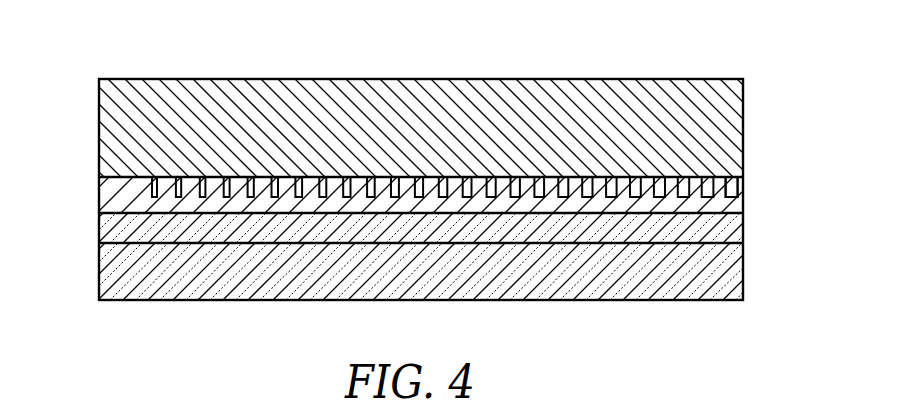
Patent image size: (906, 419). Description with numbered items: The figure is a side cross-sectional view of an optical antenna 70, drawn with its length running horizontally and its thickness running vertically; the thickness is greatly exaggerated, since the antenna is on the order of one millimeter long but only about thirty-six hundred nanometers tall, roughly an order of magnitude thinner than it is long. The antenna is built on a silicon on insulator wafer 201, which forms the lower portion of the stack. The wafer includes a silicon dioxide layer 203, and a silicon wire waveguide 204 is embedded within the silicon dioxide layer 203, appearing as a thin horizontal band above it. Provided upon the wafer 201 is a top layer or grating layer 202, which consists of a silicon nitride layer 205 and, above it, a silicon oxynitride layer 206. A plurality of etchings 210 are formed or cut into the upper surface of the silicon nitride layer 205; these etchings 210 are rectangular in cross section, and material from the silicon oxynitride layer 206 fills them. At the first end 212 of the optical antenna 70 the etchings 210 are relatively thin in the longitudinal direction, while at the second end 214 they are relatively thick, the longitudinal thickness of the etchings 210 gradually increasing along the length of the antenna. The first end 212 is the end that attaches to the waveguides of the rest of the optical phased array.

The optical antenna 70 is at (122, 46).
The silicon on insulator (SOI) wafer 201 is at (96, 300).
The grating layer 202 is at (96, 212).
The silicon dioxide layer 203 is at (743, 266).
The silicon wire waveguide 204 is at (743, 230).
The silicon nitride layer 205 is at (743, 198).
The silicon oxynitride layer 206 is at (743, 133).
The etchings 210 is at (275, 198).
The first end 212 is at (148, 197).
The second end 214 is at (714, 191).